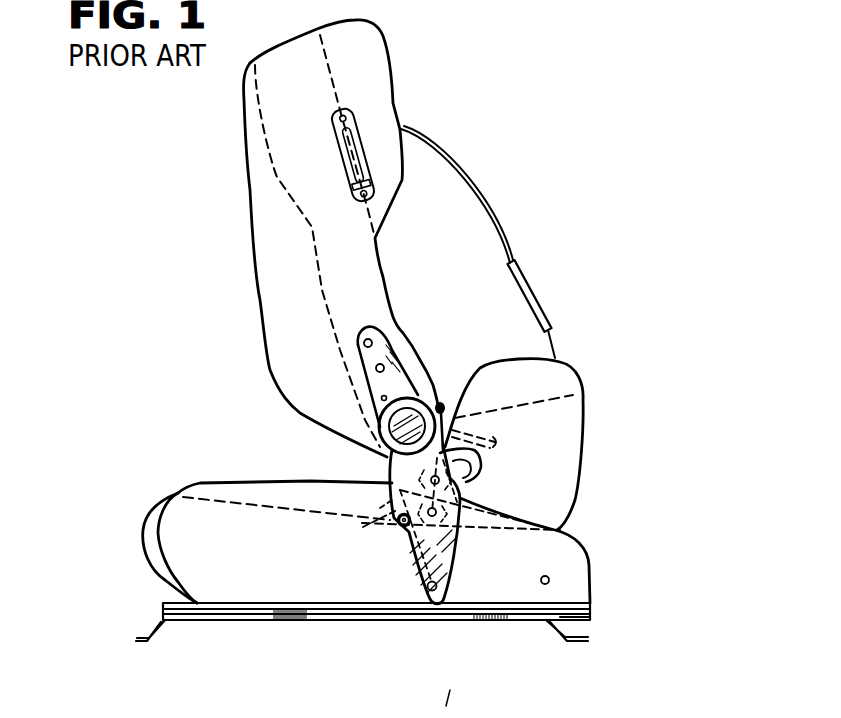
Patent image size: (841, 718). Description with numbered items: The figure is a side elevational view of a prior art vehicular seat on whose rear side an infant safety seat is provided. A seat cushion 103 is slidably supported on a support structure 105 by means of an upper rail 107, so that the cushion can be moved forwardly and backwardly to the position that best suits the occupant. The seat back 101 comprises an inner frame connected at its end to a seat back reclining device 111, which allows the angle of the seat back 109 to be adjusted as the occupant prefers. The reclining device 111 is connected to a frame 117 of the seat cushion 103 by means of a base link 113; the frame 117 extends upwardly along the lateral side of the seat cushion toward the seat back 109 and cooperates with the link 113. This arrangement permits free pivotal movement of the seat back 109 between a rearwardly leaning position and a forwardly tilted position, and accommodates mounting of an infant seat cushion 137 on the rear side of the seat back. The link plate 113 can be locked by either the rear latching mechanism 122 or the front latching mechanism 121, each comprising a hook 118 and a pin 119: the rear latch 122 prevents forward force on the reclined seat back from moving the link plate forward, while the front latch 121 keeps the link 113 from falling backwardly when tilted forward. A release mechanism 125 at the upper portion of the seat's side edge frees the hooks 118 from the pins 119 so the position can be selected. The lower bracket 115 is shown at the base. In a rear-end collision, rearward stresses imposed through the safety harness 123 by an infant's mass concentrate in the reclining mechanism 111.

The seat back 101 is at (416, 54).
The seat cushion 103 is at (255, 490).
The support structure 105 is at (233, 630).
The upper rail 107 is at (592, 608).
The seat back 109 is at (253, 207).
The seat back reclining device 111 is at (443, 388).
The base link 113 is at (388, 467).
The lower bracket 115 is at (430, 590).
The frame 117 is at (396, 516).
The hook 118 is at (473, 470).
The pin 119 is at (548, 577).
The front latching mechanism 121 is at (392, 509).
The rear latching mechanism 122 is at (634, 547).
The safety harness 123 is at (512, 233).
The release mechanism 125 is at (370, 182).
The infant seat cushion 137 is at (573, 417).